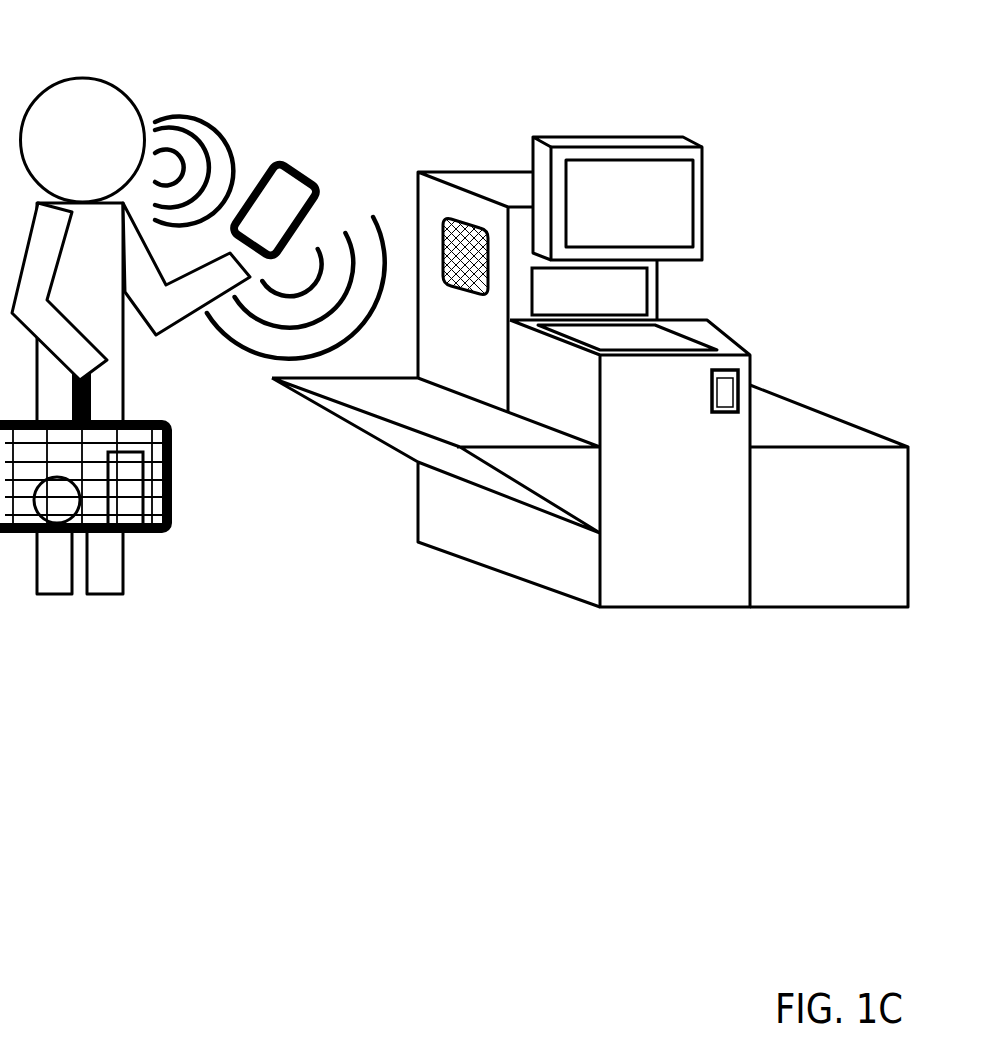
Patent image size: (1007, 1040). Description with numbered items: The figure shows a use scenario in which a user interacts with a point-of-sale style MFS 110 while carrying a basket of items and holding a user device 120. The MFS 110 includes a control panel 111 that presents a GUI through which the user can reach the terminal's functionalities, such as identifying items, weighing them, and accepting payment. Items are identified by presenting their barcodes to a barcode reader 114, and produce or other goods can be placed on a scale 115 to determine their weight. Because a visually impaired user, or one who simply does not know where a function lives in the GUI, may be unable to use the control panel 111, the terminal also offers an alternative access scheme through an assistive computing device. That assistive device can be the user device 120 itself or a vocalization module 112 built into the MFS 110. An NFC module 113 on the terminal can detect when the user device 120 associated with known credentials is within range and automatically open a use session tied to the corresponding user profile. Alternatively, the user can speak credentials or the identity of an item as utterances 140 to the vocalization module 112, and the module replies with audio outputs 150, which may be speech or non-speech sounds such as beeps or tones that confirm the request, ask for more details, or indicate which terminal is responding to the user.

The MFS 110 is at (503, 185).
The control panel 111 is at (672, 203).
The vocalization module 112 is at (448, 220).
The Near Field Communications (NFC) module 113 is at (742, 385).
The barcode reader 114 is at (637, 302).
The scale 115 is at (648, 338).
The user device 120 is at (279, 157).
The utterances 140 is at (192, 117).
The audio outputs 150 is at (264, 362).